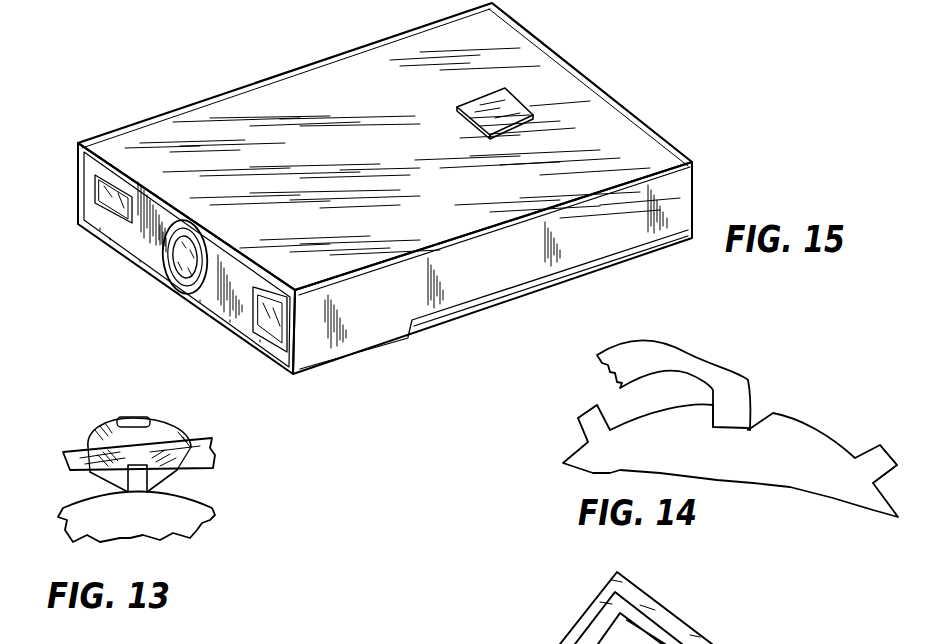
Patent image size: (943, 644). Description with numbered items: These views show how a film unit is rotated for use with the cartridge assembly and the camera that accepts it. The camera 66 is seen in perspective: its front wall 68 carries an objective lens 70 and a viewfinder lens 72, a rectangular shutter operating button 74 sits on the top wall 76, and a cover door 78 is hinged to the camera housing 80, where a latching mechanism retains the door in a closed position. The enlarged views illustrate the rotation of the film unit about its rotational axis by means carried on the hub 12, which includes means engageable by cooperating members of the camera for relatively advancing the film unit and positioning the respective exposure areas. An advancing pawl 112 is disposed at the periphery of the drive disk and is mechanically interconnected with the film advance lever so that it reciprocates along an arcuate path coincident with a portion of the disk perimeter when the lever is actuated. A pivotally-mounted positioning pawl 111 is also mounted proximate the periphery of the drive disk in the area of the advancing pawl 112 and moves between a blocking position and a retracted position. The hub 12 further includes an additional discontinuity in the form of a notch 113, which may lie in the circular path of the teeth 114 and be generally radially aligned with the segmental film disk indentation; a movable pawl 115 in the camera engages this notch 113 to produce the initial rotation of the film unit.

In FIG. 14, the hub 12 is at (798, 465).
In FIG. 13, the hub 12 is at (153, 527).
In FIG. 15, the camera 66 is at (405, 190).
In FIG. 15, the front wall 68 is at (213, 297).
In FIG. 15, the objective lens 70 is at (183, 257).
In FIG. 15, the viewfinder lens 72 is at (253, 325).
In FIG. 15, the shutter operating button 74 is at (513, 103).
In FIG. 15, the top wall 76 is at (385, 146).
In FIG. 15, the cover door 78 is at (620, 258).
In FIG. 15, the camera housing 80 is at (677, 192).
In FIG. 13, the positioning pawl 111 is at (115, 472).
In FIG. 13, the advancing pawl 112 is at (163, 470).
In FIG. 14, the notch 113 is at (753, 422).
In FIG. 14, the teeth 114 is at (588, 420).
In FIG. 13, the teeth 114 is at (147, 470).
In FIG. 14, the movable pawl 115 is at (732, 400).